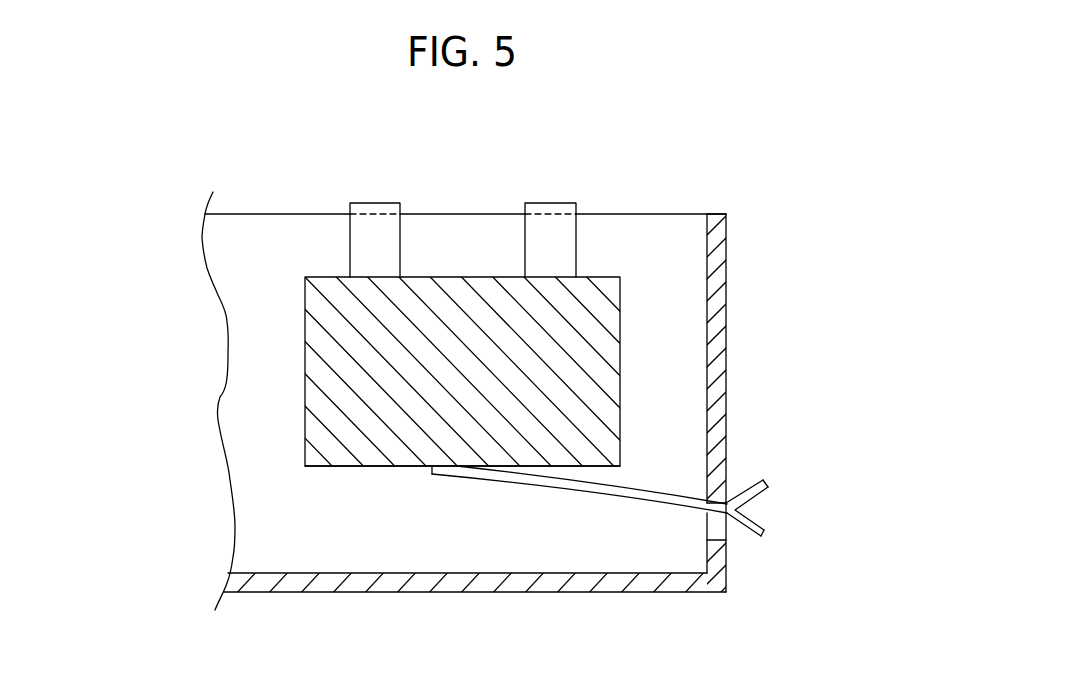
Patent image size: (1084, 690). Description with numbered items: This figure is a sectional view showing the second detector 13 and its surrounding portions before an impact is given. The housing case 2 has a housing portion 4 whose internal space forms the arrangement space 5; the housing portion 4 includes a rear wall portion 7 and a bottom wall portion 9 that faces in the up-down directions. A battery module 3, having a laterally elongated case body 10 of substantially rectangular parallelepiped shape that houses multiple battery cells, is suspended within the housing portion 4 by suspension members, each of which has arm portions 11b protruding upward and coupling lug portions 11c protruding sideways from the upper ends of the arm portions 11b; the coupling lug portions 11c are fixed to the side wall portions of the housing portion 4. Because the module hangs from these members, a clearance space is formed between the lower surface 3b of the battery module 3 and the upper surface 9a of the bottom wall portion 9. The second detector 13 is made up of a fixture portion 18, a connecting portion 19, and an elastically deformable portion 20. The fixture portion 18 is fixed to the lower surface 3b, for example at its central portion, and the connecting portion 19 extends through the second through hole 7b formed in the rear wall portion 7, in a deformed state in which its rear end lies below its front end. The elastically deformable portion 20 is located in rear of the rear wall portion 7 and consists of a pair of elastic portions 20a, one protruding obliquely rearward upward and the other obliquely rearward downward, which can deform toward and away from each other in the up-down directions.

The housing case 2 is at (718, 253).
The battery module 3 is at (312, 311).
The lower surface 3b is at (343, 467).
The housing portion 4 is at (715, 287).
The arrangement space 5 is at (678, 263).
The rear wall portion 7 is at (720, 323).
The second through hole 7b is at (725, 530).
The bottom wall portion 9 is at (362, 583).
The upper surface 9a is at (523, 573).
The case body 10 is at (312, 345).
The arm portion 11b is at (350, 251).
The coupling lug portion 11c is at (377, 203).
The second detector 13 is at (650, 494).
The fixture portion 18 is at (453, 475).
The connecting portion 19 is at (609, 496).
The elastically deformable portion 20 is at (766, 487).
The elastic portion 20a is at (768, 488).